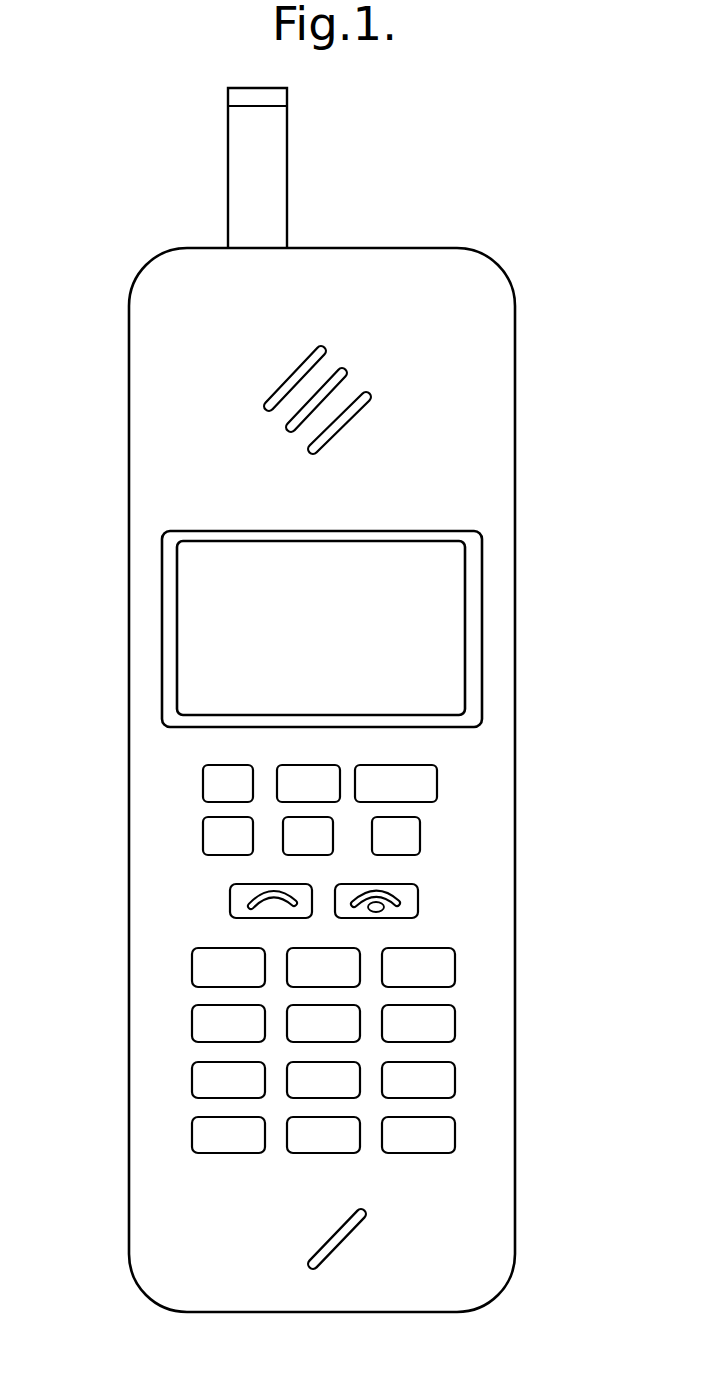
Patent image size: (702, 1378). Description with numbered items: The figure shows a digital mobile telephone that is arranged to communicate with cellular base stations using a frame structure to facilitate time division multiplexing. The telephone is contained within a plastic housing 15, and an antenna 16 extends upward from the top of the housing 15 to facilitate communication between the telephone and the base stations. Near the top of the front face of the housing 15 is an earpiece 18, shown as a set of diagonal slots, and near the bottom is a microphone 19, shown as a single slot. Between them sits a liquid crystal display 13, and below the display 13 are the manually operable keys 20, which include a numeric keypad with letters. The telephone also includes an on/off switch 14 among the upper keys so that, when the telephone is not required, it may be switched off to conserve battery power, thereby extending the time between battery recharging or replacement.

The liquid crystal display 13 is at (448, 645).
The on/off switch 14 is at (205, 783).
The plastic housing 15 is at (467, 298).
The antenna 16 is at (262, 181).
The earpiece 18 is at (277, 390).
The microphone 19 is at (308, 1258).
The manually operable keys 20 is at (197, 1073).